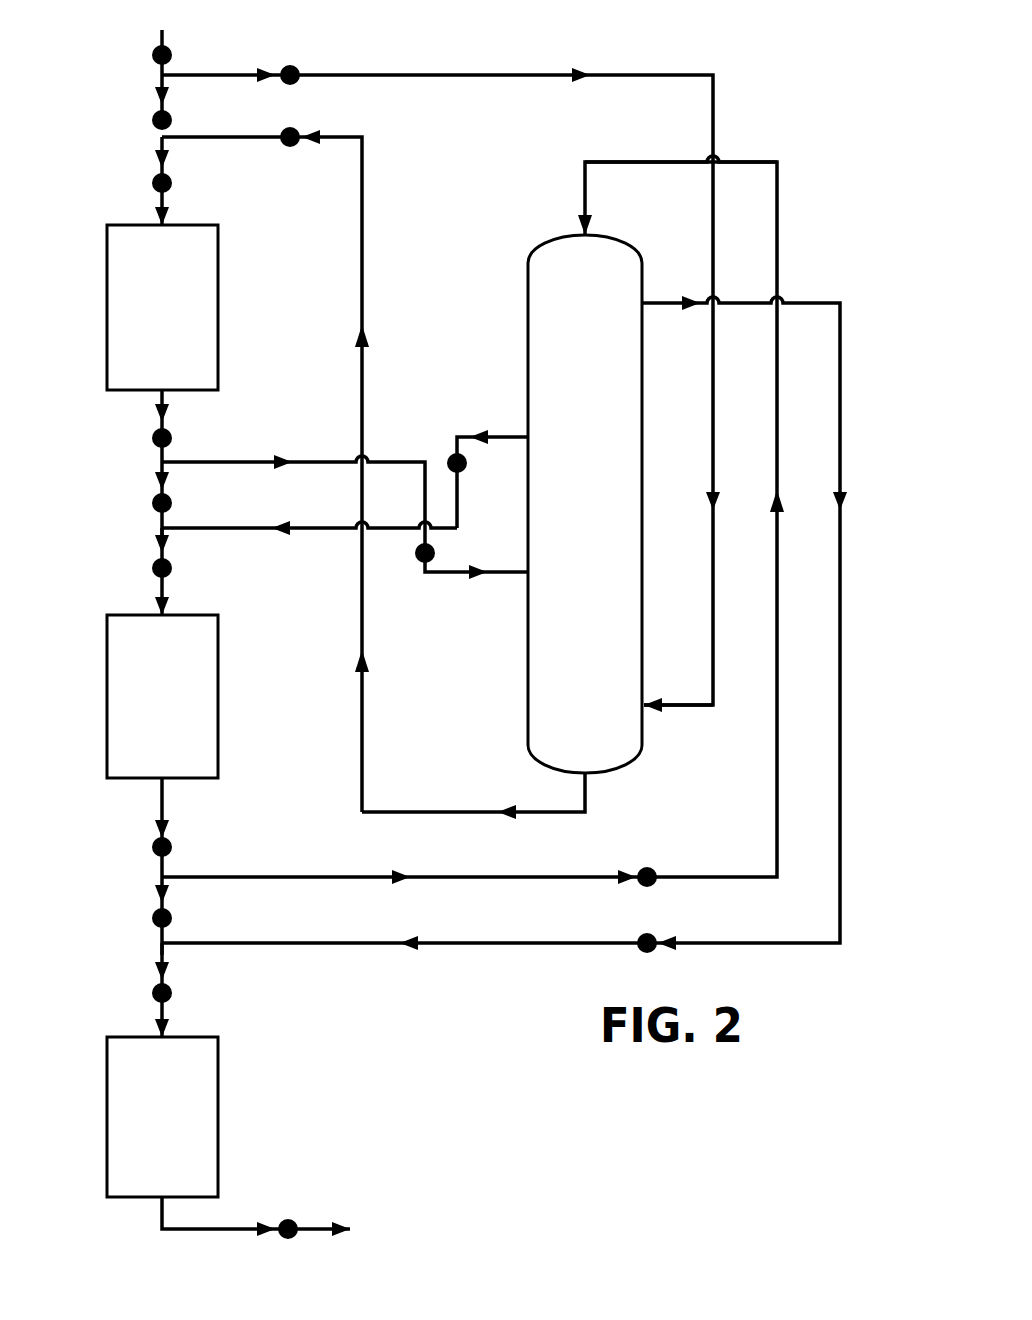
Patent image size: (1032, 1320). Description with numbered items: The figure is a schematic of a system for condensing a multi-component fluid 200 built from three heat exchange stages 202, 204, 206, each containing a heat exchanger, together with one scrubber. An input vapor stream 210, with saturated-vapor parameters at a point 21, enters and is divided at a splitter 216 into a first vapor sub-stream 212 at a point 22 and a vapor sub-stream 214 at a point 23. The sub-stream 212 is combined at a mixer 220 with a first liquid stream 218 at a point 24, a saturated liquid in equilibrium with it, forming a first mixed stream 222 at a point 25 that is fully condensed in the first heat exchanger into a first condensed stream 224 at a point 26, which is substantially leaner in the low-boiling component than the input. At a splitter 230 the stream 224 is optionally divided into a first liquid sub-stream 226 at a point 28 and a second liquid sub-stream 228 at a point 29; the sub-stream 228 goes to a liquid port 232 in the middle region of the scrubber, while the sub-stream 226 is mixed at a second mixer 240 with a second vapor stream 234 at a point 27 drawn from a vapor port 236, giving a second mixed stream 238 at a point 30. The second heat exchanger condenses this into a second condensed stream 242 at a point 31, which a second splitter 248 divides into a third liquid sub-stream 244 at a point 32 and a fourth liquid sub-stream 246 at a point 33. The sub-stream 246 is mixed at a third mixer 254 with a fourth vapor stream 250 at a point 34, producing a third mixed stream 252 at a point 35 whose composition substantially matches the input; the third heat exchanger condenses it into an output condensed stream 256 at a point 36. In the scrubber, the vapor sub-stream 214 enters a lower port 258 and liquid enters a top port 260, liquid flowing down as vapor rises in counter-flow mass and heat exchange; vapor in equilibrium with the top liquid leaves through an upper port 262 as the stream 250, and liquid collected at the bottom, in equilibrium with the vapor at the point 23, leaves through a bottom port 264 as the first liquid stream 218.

The system for condensing a multi-component fluid 200 is at (800, 111).
The first heat exchange stage 202 is at (250, 305).
The second heat exchange stage 204 is at (245, 698).
The third heat exchange stage 206 is at (252, 1118).
The point 21 is at (150, 55).
The point 22 is at (150, 120).
The point 23 is at (290, 89).
The point 24 is at (290, 152).
The point 25 is at (150, 183).
The point 26 is at (150, 438).
The point 27 is at (470, 465).
The point 28 is at (150, 503).
The point 29 is at (413, 553).
The point 30 is at (150, 568).
The point 31 is at (150, 846).
The point 32 is at (647, 865).
The point 33 is at (150, 918).
The point 34 is at (647, 930).
The point 35 is at (150, 991).
The point 36 is at (287, 1216).
The input vapor stream 210 is at (163, 35).
The first vapor sub-stream 212 is at (165, 80).
The vapor sub-stream 214 is at (392, 78).
The splitter 216 is at (163, 78).
The first liquid stream 218 is at (363, 215).
The mixer 220 is at (163, 140).
The first mixed stream 222 is at (165, 143).
The first condensed stream 224 is at (167, 395).
The first liquid sub-stream 226 is at (340, 460).
The second liquid sub-stream 228 is at (165, 462).
The splitter 230 is at (163, 462).
The liquid port 232 is at (530, 573).
The second vapor stream 234 is at (340, 530).
The vapor port 236 is at (530, 437).
The second mixed stream 238 is at (165, 530).
The second mixer 240 is at (163, 528).
The second condensed stream 242 is at (163, 793).
The third liquid sub-stream 244 is at (338, 875).
The fourth liquid sub-stream 246 is at (165, 880).
The second splitter 248 is at (163, 877).
The fourth vapor stream 250 is at (338, 945).
The third mixed stream 252 is at (165, 947).
The third mixer 254 is at (163, 945).
The output condensed stream 256 is at (315, 1225).
The lower port 258 is at (640, 703).
The top port 260 is at (585, 235).
The upper port 262 is at (642, 303).
The bottom port 264 is at (585, 775).